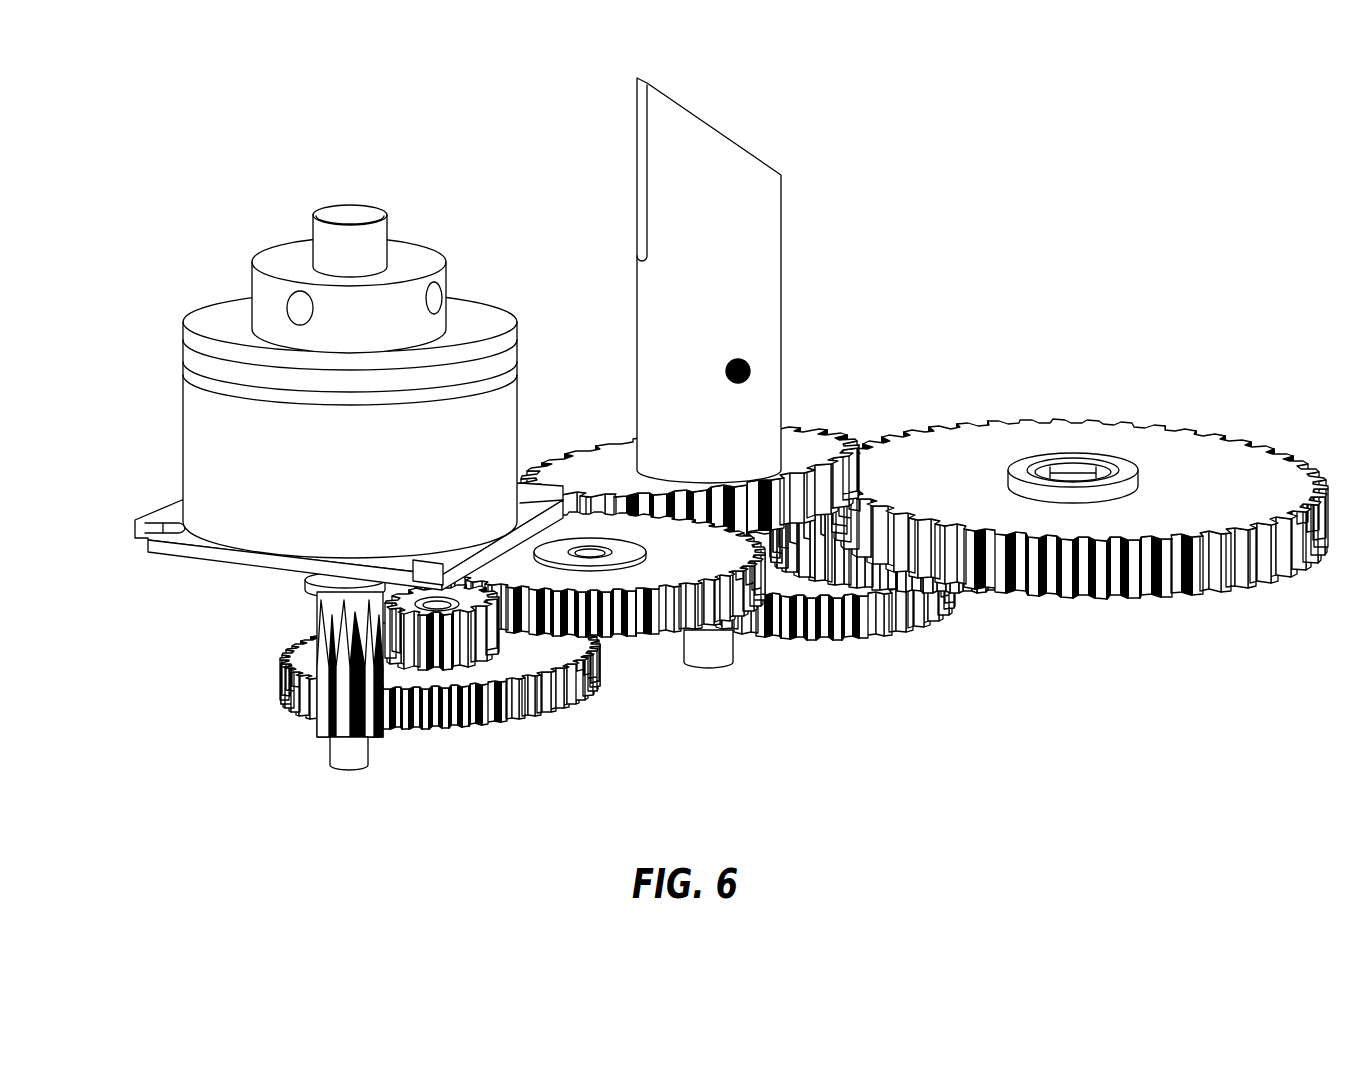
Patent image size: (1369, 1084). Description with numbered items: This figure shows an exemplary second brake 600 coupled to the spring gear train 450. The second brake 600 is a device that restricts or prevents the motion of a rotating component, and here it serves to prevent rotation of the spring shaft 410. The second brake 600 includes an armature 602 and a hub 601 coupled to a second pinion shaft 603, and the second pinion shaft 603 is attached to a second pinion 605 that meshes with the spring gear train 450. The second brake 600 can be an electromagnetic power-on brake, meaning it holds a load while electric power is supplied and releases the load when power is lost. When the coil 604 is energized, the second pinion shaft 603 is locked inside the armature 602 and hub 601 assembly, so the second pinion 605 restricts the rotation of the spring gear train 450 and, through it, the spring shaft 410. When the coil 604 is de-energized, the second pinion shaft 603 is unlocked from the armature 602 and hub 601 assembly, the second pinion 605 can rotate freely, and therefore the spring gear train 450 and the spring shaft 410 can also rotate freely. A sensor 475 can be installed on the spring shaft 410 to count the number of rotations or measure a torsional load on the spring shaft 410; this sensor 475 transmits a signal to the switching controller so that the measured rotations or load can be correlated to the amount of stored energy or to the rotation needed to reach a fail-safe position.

The second brake 600 is at (333, 384).
The hub 601 is at (437, 248).
The armature 602 is at (185, 325).
The second pinion shaft 603 is at (350, 212).
The coil 604 is at (182, 422).
The second pinion 605 is at (313, 730).
The spring shaft 410 is at (782, 268).
The sensor 475 is at (750, 365).
The spring gear train 450 is at (774, 604).